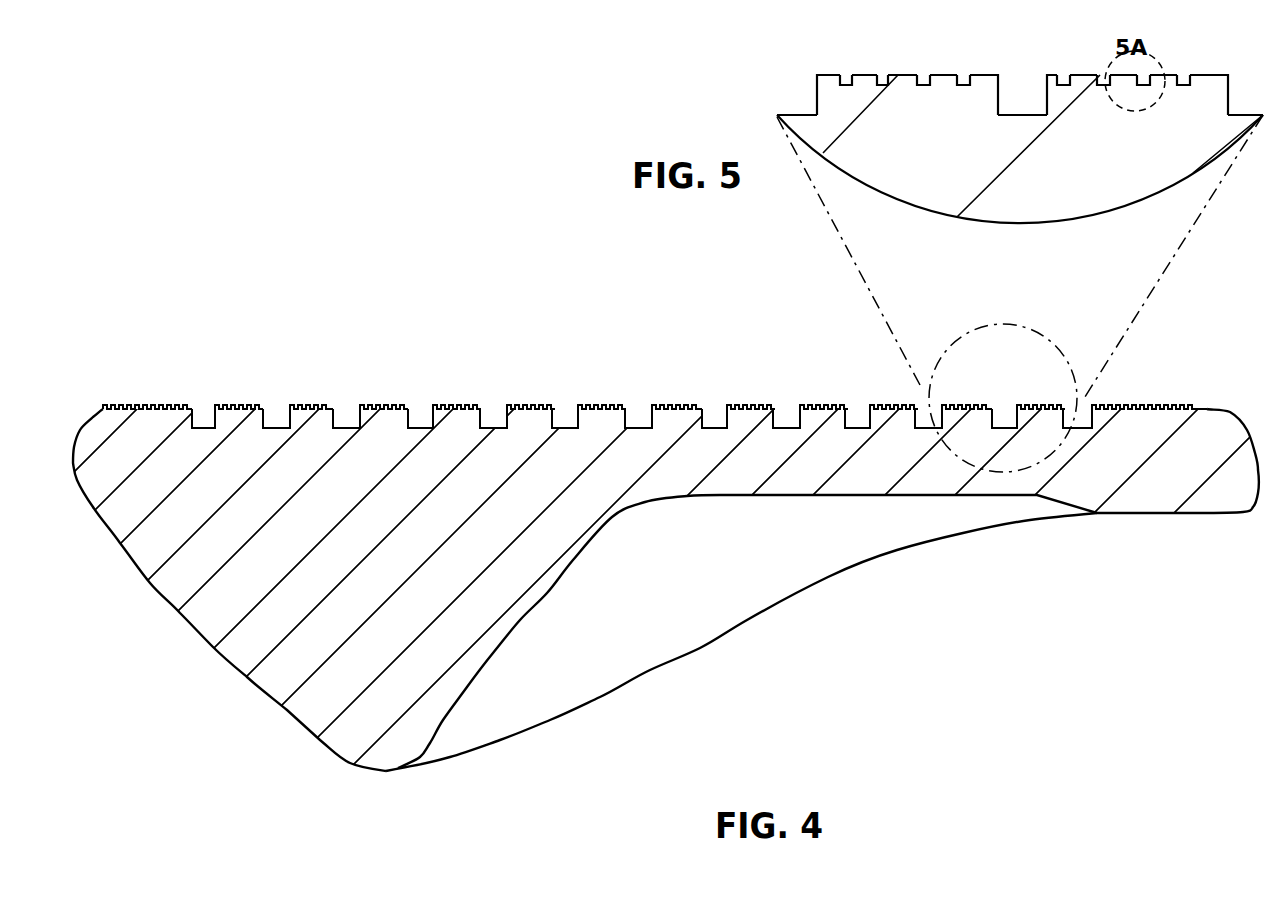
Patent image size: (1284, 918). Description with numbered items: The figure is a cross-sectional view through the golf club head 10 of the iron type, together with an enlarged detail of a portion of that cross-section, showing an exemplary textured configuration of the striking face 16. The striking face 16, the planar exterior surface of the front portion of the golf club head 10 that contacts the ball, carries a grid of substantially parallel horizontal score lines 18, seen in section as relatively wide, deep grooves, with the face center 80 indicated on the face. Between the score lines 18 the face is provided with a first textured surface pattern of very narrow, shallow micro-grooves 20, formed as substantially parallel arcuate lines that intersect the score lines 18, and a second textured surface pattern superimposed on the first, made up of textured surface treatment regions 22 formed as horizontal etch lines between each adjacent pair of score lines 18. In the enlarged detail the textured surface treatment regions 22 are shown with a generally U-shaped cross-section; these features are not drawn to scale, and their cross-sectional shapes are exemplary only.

In FIG. 4, the golf club head 10 is at (866, 633).
In FIG. 4, the striking face 16 is at (496, 388).
In FIG. 5, the striking face 16 is at (829, 62).
In FIG. 4, the score lines 18 is at (710, 415).
In FIG. 5, the score lines 18 is at (1022, 113).
In FIG. 5, the micro-grooves 20 is at (1093, 75).
In FIG. 5, the textured surface treatment regions 22 is at (924, 75).
In FIG. 4, the face center 80 is at (744, 405).